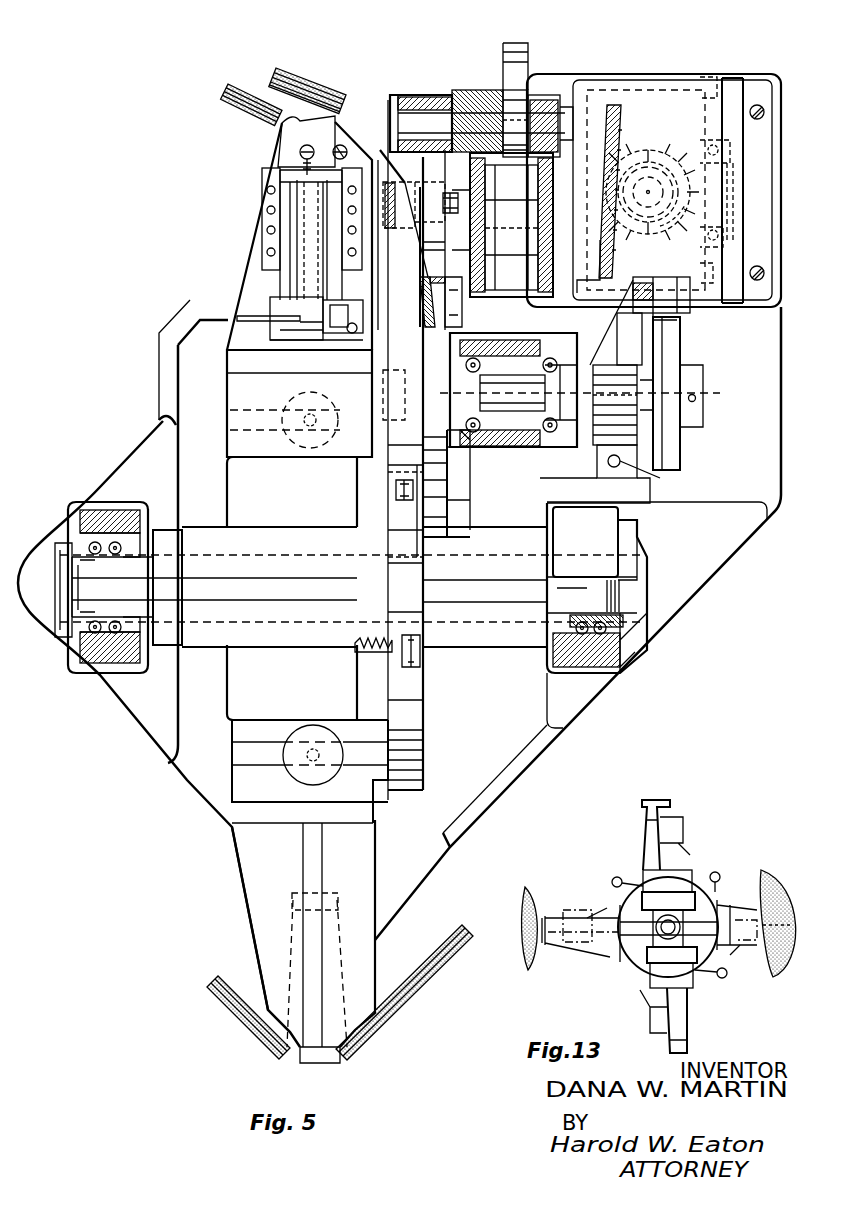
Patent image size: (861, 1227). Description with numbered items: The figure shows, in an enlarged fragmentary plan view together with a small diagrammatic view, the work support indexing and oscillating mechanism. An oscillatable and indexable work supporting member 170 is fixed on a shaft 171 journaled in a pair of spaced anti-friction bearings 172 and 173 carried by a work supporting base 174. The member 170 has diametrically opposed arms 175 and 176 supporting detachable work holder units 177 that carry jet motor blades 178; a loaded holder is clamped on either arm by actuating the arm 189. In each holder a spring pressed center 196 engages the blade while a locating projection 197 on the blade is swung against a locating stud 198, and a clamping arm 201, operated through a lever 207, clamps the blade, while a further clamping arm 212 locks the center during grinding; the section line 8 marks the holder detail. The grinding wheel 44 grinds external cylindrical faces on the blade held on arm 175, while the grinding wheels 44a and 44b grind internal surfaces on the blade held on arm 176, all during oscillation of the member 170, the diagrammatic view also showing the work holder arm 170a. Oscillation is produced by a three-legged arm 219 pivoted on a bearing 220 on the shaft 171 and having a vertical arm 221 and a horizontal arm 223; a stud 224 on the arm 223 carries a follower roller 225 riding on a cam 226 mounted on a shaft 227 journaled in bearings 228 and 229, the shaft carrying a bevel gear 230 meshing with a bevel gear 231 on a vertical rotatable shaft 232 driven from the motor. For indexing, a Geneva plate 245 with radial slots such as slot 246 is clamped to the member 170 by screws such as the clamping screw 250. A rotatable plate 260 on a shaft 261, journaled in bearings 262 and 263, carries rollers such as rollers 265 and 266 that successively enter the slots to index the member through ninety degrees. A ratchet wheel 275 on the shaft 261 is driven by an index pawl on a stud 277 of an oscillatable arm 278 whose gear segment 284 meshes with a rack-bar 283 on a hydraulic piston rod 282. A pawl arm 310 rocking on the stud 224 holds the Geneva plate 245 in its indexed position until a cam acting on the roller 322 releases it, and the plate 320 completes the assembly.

In FIG. 5, the section line 8- 8 is at (282, 53).
In FIG. 5, the grinding wheel 44 is at (227, 84).
In FIG. 13, the grinding wheel 44 is at (541, 972).
In FIG. 5, the grinding wheel 44a is at (457, 989).
In FIG. 5, the grinding wheel 44b is at (216, 1008).
In FIG. 13, the grinding wheel 44b is at (789, 982).
In FIG. 5, the work supporting member 170 is at (217, 477).
In FIG. 13, the work supporting member 170 is at (692, 905).
In FIG. 13, the work holder arm 170a is at (612, 906).
In FIG. 5, the shaft 171 is at (150, 545).
In FIG. 5, the anti-friction bearing 172 is at (112, 665).
In FIG. 5, the anti-friction bearing 173 is at (608, 665).
In FIG. 5, the work supporting base 174 is at (102, 500).
In FIG. 5, the arm 175 is at (230, 395).
In FIG. 13, the arm 175 is at (668, 890).
In FIG. 5, the arm 176 is at (232, 786).
In FIG. 13, the arm 176 is at (672, 967).
In FIG. 5, the work holder unit 177 is at (232, 301).
In FIG. 13, the work holder unit 177 is at (638, 837).
In FIG. 5, the jet motor blade 178 is at (283, 133).
In FIG. 5, the arm 189 is at (290, 405).
In FIG. 5, the spring pressed center 196 is at (262, 268).
In FIG. 5, the locating projection 197 is at (300, 150).
In FIG. 5, the locating stud 198 is at (322, 110).
In FIG. 5, the clamping arm 201 is at (293, 155).
In FIG. 5, the lever 207 is at (300, 298).
In FIG. 5, the clamping arm 212 is at (248, 318).
In FIG. 5, the 3-legged arm 219 is at (475, 660).
In FIG. 5, the bearing 220 is at (487, 635).
In FIG. 5, the vertical arm 221 is at (580, 425).
In FIG. 5, the horizontal arm 223 is at (511, 239).
In FIG. 5, the stud 224 is at (473, 117).
In FIG. 5, the follower roller 225 is at (505, 105).
In FIG. 5, the cam 226 is at (520, 43).
In FIG. 5, the shaft 227 is at (683, 226).
In FIG. 5, the anti-friction bearing 228 is at (560, 90).
In FIG. 5, the anti-friction bearing 229 is at (722, 80).
In FIG. 5, the bevel gear 230 is at (605, 85).
In FIG. 5, the bevel gear 231 is at (642, 150).
In FIG. 5, the vertical rotatable shaft 232 is at (660, 150).
In FIG. 5, the Geneva plate 245 is at (431, 738).
In FIG. 5, the radial slot 246 is at (413, 618).
In FIG. 5, the clamping screw 250 is at (385, 670).
In FIG. 5, the rotatable plate 260 is at (442, 510).
In FIG. 5, the shaft 261 is at (515, 410).
In FIG. 5, the anti-friction bearing 262 is at (478, 440).
In FIG. 5, the anti-friction bearing 263 is at (552, 440).
In FIG. 5, the roller 265 is at (383, 380).
In FIG. 5, the roller 266 is at (383, 165).
In FIG. 5, the ratchet wheel 275 is at (672, 445).
In FIG. 5, the stud 277 is at (688, 312).
In FIG. 5, the oscillatable arm 278 is at (640, 360).
In FIG. 5, the piston rod 282 is at (620, 500).
In FIG. 5, the rack-bar 283 is at (625, 465).
In FIG. 5, the gear segment 284 is at (625, 375).
In FIG. 5, the pawl arm 310 is at (410, 95).
In FIG. 5, the plate 320 is at (445, 310).
In FIG. 5, the roller 322 is at (423, 263).